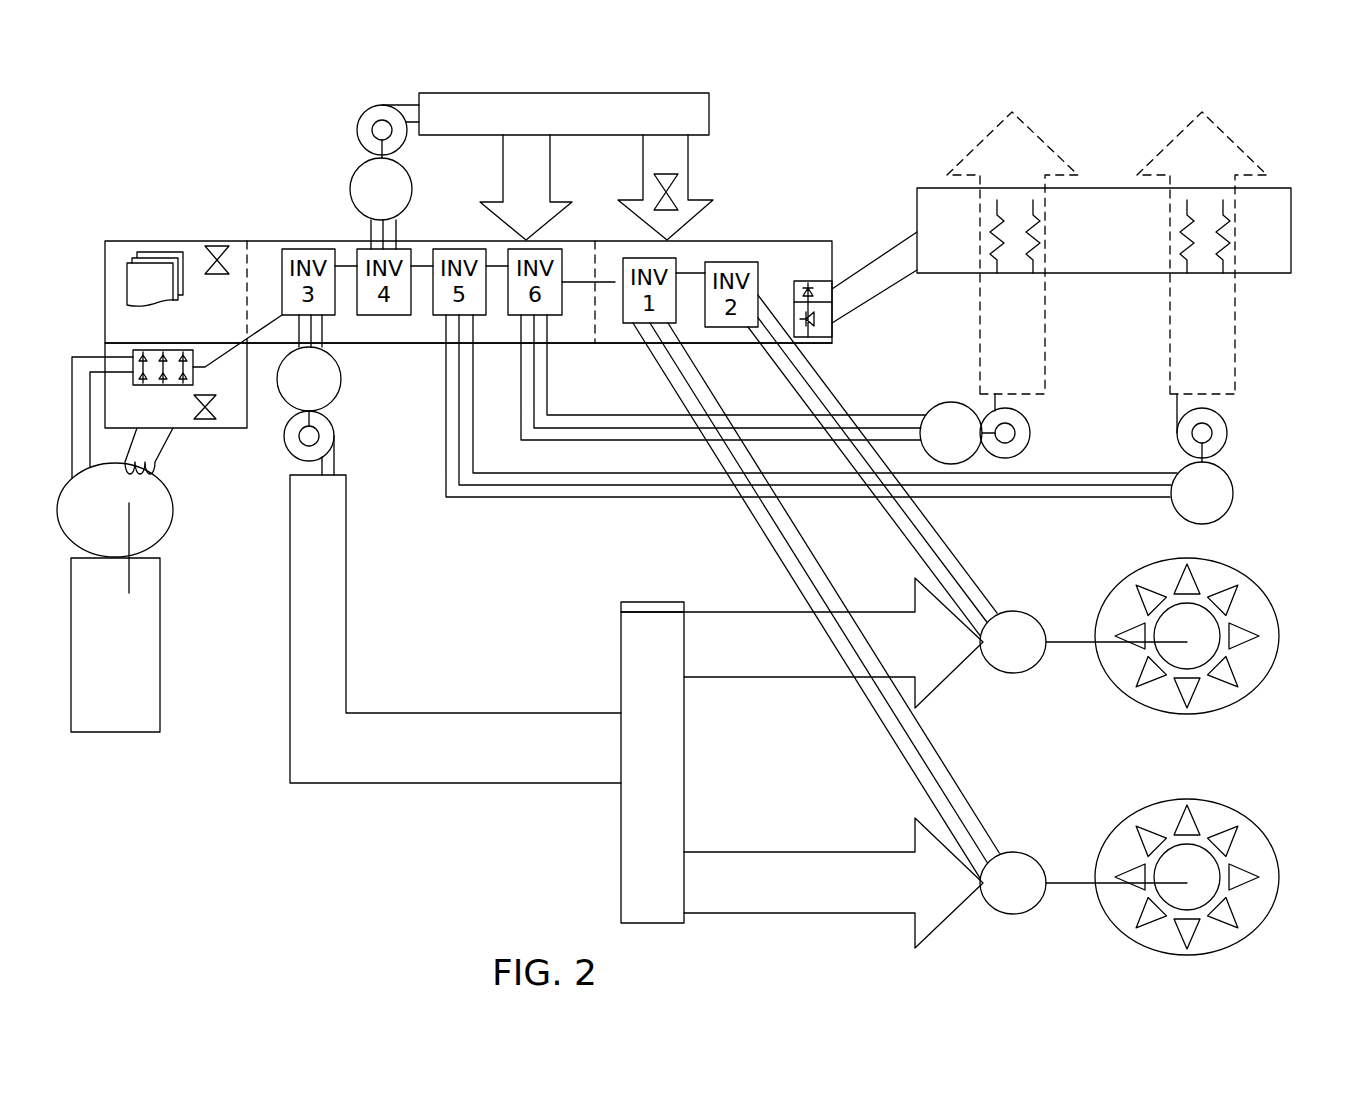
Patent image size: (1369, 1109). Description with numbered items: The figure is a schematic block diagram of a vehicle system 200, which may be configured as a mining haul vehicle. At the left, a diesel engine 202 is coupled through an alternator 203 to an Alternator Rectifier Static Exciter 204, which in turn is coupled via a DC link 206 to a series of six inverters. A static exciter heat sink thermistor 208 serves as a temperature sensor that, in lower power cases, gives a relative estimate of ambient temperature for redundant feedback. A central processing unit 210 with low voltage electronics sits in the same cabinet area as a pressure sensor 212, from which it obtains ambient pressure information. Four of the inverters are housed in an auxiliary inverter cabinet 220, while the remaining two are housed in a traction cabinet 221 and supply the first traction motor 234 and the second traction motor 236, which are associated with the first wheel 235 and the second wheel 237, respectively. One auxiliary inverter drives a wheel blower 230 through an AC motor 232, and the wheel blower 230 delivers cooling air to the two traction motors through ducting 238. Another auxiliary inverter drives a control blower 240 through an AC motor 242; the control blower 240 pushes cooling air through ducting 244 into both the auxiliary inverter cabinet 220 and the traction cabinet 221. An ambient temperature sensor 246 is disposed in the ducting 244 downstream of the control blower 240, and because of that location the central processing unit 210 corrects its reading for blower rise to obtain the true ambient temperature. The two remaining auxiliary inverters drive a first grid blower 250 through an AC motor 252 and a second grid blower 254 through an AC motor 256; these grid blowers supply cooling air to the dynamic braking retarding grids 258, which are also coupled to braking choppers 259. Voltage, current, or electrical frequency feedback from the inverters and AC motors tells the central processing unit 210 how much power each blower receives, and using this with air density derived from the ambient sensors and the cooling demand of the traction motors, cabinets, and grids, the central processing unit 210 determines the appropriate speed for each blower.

The vehicle system 200 is at (1240, 123).
The diesel engine 202 is at (117, 732).
The alternator 203 is at (173, 518).
The Alternator Rectifier Static Exciter 204 is at (131, 357).
The DC link 206 is at (268, 323).
The static exciter heat sink thermistor 208 is at (204, 420).
The central processing unit 210 is at (150, 250).
The pressure sensor 212 is at (217, 247).
The auxiliary inverter cabinet 220 is at (408, 345).
The traction cabinet 221 is at (737, 345).
The wheel blower 230 is at (333, 437).
The AC motor 232 is at (338, 388).
The first traction motor 234 is at (1013, 852).
The first wheel 235 is at (1190, 800).
The second traction motor 236 is at (1013, 675).
The second wheel 237 is at (1160, 712).
The ducting 238 is at (449, 712).
The control blower 240 is at (355, 125).
The AC motor 242 is at (351, 190).
The ducting 244 is at (710, 113).
The ambient temperature sensor 246 is at (677, 185).
The first grid blower 250 is at (1228, 433).
The AC motor 252 is at (1233, 493).
The second grid blower 254 is at (1031, 433).
The AC motor 256 is at (950, 401).
The dynamic braking retarding grids 258 is at (1104, 188).
The braking choppers 259 is at (826, 328).